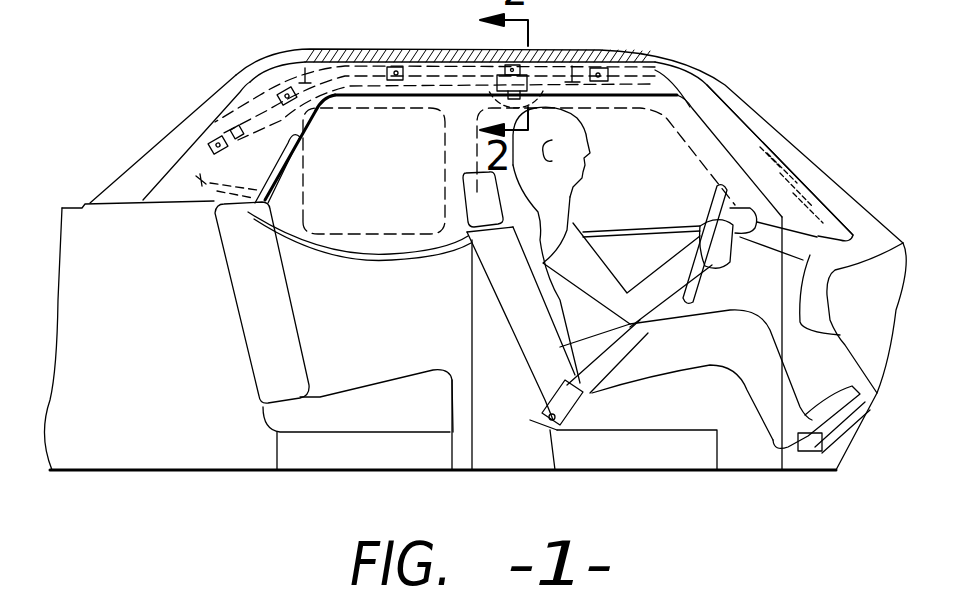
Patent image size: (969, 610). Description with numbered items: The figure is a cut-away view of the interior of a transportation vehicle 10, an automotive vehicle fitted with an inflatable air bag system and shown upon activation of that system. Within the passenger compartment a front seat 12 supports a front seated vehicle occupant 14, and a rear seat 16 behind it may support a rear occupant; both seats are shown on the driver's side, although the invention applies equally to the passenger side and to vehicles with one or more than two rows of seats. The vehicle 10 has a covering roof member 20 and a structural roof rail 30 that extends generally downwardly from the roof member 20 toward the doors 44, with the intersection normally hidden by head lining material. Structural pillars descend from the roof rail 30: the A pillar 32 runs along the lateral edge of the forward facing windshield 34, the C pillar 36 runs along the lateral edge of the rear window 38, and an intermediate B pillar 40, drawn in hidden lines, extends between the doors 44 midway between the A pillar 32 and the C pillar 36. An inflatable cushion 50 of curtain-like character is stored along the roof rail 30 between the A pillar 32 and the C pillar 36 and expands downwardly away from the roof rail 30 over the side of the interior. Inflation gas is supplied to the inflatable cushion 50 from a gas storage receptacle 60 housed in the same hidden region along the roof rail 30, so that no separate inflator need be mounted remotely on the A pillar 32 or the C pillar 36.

The transportation vehicle 10 is at (760, 78).
The front seat 12 is at (525, 343).
The front seated vehicle occupant 14 is at (572, 228).
The rear seat 16 is at (247, 293).
The covering roof member 20 is at (354, 52).
The structural roof rail 30 is at (650, 60).
The "A" pillar 32 is at (727, 150).
The windshield 34 is at (823, 174).
The "C" pillar 36 is at (200, 155).
The rear window 38 is at (142, 163).
The "B" pillar 40 is at (430, 128).
The doors 44 is at (396, 347).
The inflatable cushion 50 is at (300, 52).
The gas storage receptacle 60 is at (562, 84).